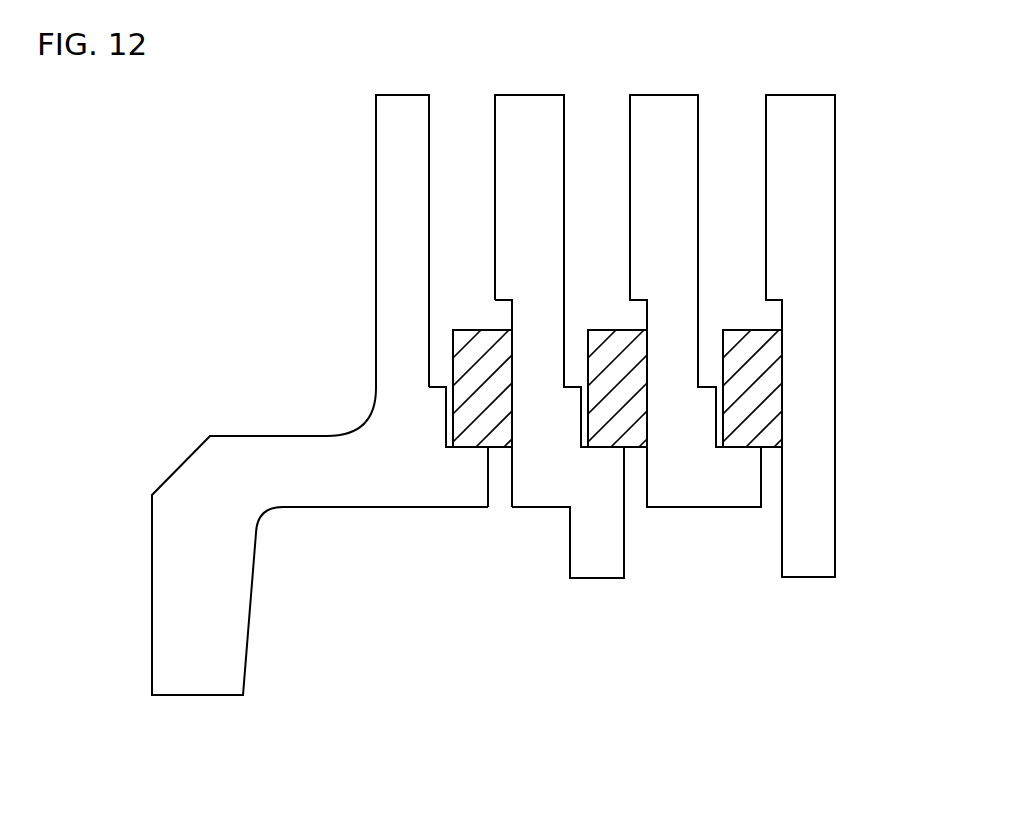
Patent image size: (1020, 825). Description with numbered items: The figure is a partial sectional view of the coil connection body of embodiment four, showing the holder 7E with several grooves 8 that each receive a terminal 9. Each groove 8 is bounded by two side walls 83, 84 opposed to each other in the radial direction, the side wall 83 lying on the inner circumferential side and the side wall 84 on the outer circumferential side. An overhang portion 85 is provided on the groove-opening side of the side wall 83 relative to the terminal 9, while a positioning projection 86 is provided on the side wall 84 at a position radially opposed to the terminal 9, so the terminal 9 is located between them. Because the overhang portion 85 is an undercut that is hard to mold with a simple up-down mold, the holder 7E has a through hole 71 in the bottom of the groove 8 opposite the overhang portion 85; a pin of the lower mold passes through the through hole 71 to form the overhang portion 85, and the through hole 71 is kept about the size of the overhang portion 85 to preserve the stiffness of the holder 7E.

The holder 7E is at (152, 577).
The side wall 84 is at (429, 222).
The overhang portion 85 is at (503, 147).
The positioning projection 86 is at (438, 408).
The side wall 83 is at (512, 321).
The through hole 71 is at (498, 500).
The groove 8 is at (735, 218).
The terminal 9 is at (755, 357).